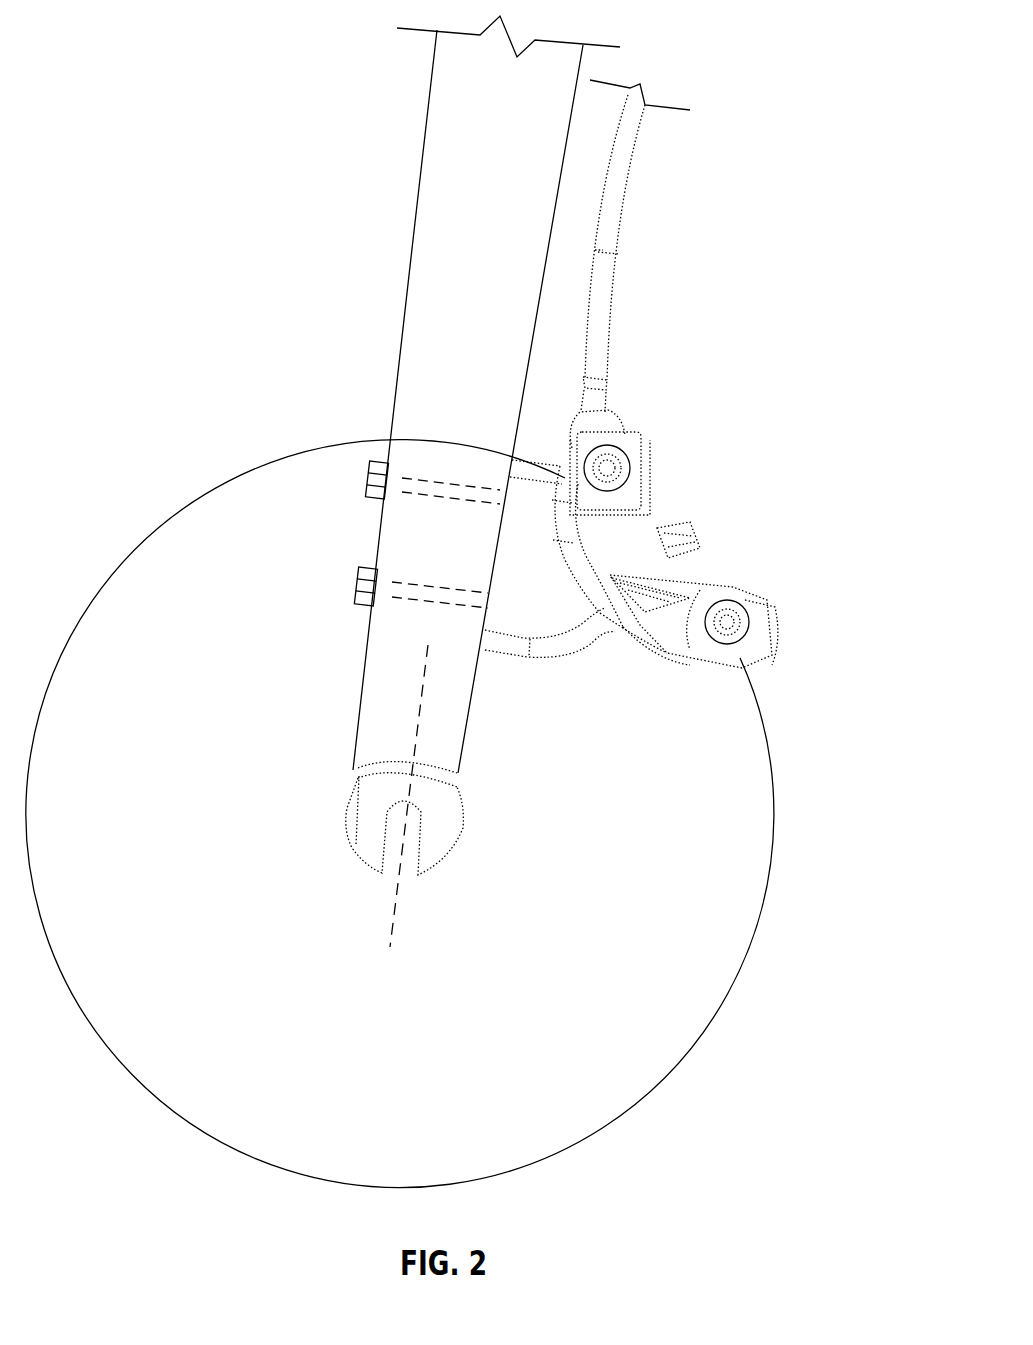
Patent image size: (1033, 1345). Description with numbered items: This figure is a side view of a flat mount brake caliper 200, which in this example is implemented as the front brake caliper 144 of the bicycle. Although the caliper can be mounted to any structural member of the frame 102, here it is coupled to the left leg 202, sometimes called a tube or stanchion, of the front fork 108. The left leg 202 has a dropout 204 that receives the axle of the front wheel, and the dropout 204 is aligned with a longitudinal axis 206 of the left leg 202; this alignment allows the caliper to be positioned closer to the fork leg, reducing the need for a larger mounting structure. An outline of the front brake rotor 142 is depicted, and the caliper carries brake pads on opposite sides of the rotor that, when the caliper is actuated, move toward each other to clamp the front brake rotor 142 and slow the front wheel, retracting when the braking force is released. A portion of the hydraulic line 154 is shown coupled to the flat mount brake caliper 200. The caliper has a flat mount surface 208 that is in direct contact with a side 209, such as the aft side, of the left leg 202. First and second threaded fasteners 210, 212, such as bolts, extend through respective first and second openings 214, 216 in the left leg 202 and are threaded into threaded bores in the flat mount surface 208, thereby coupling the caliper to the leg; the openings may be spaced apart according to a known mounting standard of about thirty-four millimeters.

The frame 102 is at (458, 118).
The front fork 108 is at (435, 207).
The left leg 202 is at (427, 328).
The dropout 204 is at (342, 794).
The longitudinal axis 206 is at (393, 913).
The first threaded fastener 210 is at (368, 478).
The second threaded fastener 212 is at (357, 587).
The first opening 214 is at (409, 468).
The second opening 216 is at (395, 573).
The front brake rotor 142 is at (160, 528).
The hydraulic line 154 is at (612, 197).
The side 209 is at (533, 335).
The flat mount surface 208 is at (500, 545).
The flat mount brake caliper 200 is at (736, 511).
The front brake caliper 144 is at (752, 570).